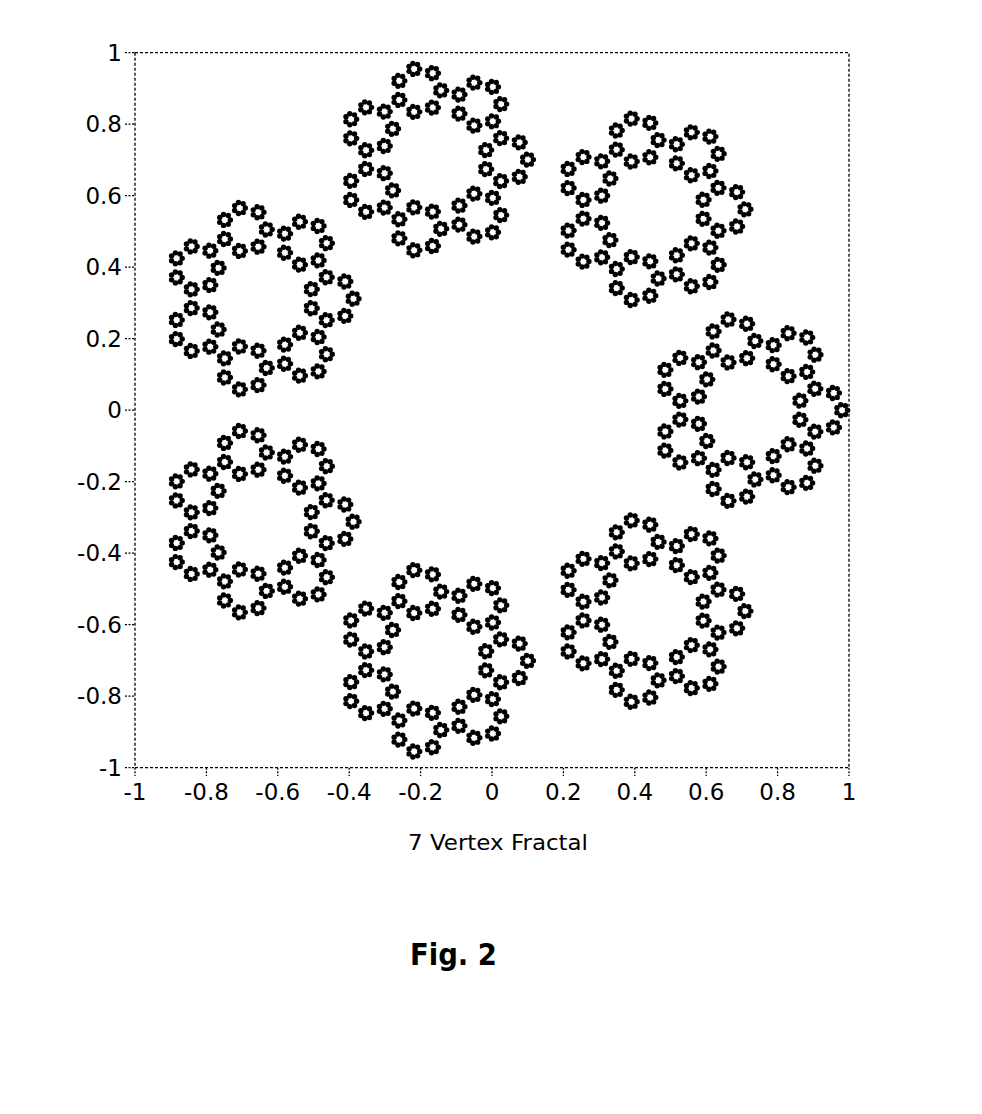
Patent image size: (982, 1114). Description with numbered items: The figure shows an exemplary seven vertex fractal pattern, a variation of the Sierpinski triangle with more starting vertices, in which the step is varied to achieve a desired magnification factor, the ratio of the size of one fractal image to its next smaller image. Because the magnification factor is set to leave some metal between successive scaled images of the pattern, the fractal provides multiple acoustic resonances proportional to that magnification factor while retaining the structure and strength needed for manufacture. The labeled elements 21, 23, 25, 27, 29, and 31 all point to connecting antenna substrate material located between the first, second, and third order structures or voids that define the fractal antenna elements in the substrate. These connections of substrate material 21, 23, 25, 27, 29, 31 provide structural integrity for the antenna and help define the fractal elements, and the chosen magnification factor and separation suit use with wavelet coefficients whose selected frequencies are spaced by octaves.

The connecting antenna substrate material 21 is at (163, 252).
The connecting antenna substrate material 23 is at (527, 485).
The connecting antenna substrate material 25 is at (328, 185).
The connecting antenna substrate material 27 is at (553, 142).
The connecting antenna substrate material 29 is at (667, 125).
The connecting antenna substrate material 31 is at (648, 223).